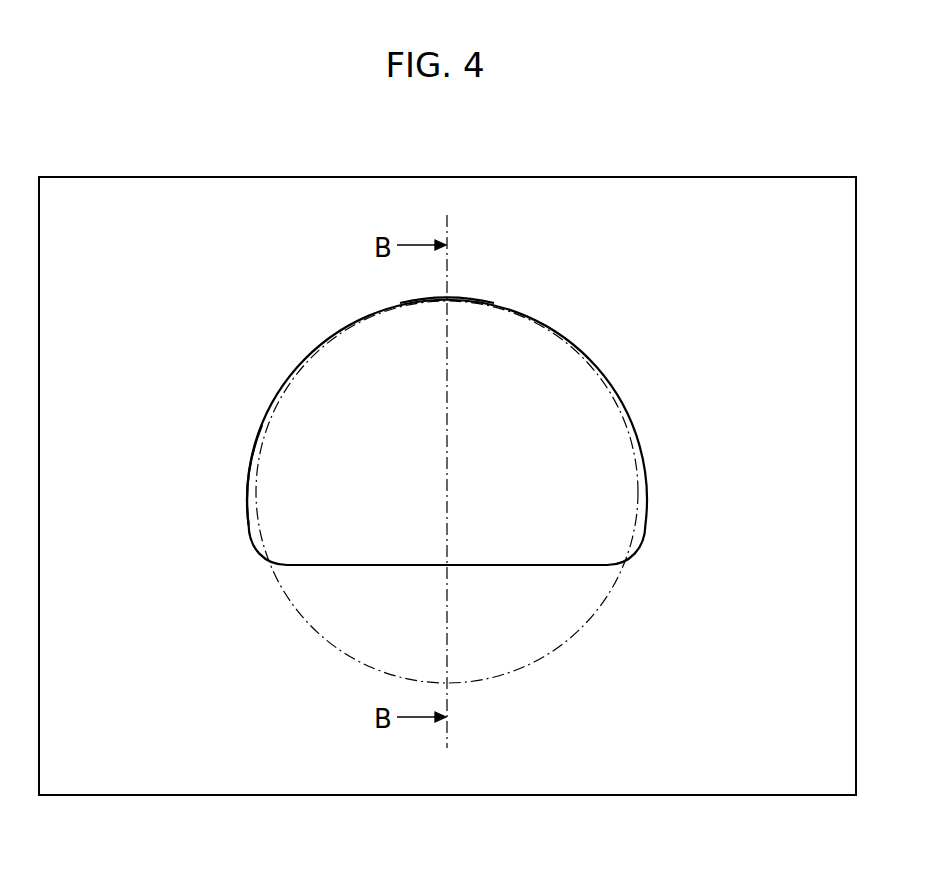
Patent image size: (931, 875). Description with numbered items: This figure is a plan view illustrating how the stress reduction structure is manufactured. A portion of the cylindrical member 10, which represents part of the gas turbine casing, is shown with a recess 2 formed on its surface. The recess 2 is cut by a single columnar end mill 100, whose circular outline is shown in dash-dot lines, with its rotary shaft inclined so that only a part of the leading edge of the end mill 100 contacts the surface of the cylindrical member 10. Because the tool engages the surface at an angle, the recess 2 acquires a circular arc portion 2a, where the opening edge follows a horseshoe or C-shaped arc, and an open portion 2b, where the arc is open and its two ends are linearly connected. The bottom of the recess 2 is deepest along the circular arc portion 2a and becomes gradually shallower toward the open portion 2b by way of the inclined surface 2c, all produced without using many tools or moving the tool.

The cylindrical member 10 is at (674, 197).
The end mill 100 is at (584, 646).
The recess 2 is at (572, 350).
The circular arc portion 2a is at (450, 308).
The open portion 2b is at (488, 565).
The inclined surface 2c is at (270, 453).